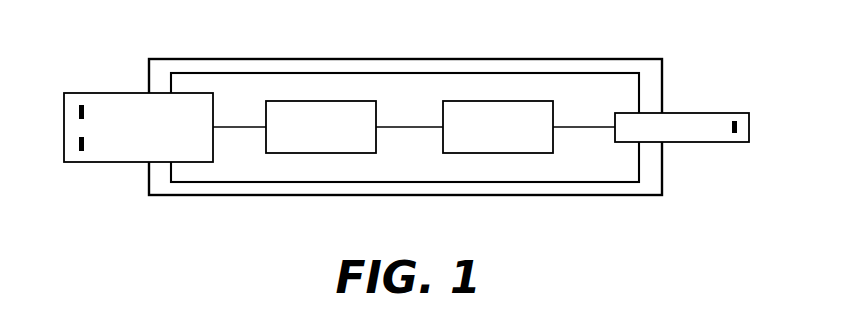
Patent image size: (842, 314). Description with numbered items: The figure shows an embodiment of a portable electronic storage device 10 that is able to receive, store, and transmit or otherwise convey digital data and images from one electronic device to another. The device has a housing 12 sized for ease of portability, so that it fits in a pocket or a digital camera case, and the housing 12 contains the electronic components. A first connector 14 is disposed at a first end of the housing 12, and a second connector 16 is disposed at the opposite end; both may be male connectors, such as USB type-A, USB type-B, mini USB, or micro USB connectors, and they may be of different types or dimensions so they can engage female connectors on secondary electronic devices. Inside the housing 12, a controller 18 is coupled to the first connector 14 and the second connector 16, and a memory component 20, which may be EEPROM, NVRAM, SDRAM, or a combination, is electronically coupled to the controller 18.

The portable electronic storage device 10 is at (138, 40).
The housing 12 is at (532, 58).
The first connector 14 is at (120, 138).
The second connector 16 is at (705, 112).
The controller 18 is at (308, 139).
The memory component 20 is at (483, 139).